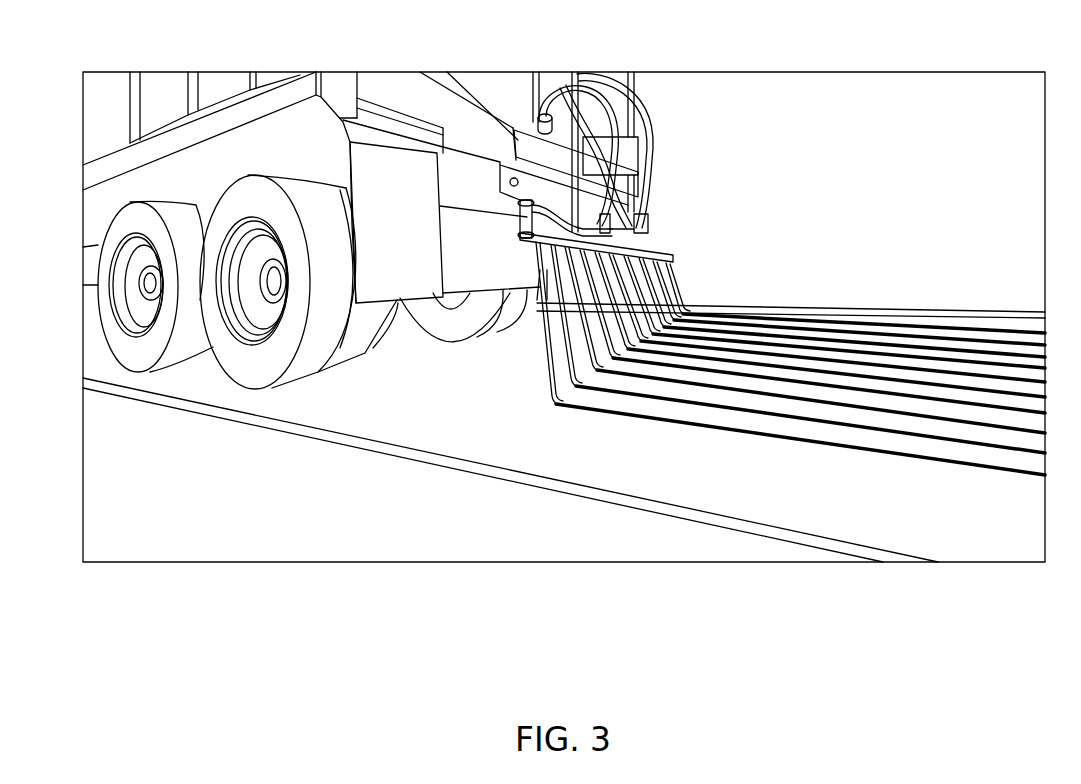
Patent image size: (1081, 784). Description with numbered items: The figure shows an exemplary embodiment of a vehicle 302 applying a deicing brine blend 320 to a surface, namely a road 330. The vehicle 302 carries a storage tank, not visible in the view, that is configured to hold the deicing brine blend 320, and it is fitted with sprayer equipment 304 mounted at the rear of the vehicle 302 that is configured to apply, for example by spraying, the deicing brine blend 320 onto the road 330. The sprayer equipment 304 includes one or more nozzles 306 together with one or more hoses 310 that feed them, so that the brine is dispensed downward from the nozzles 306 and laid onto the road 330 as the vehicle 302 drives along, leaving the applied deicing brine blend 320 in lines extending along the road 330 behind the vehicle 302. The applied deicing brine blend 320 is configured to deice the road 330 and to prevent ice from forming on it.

The vehicle 302 is at (126, 165).
The sprayer equipment 304 is at (648, 207).
The nozzles 306 is at (675, 262).
The hoses 310 is at (550, 378).
The deicing brine blend 320 is at (626, 411).
The road 330 is at (407, 432).